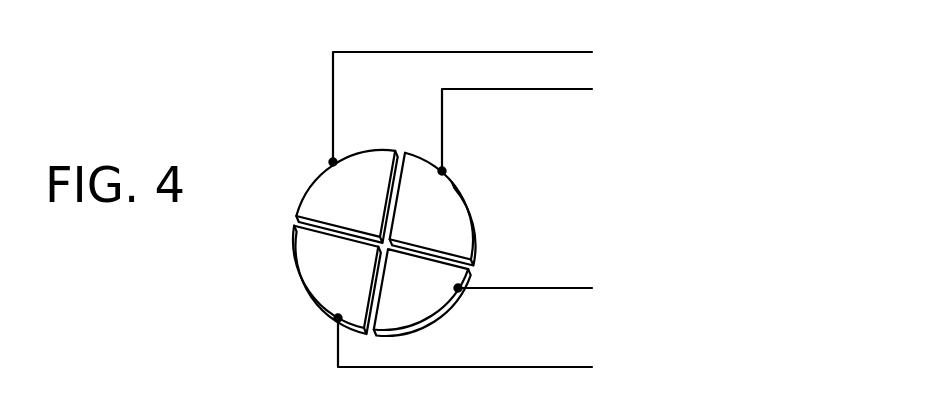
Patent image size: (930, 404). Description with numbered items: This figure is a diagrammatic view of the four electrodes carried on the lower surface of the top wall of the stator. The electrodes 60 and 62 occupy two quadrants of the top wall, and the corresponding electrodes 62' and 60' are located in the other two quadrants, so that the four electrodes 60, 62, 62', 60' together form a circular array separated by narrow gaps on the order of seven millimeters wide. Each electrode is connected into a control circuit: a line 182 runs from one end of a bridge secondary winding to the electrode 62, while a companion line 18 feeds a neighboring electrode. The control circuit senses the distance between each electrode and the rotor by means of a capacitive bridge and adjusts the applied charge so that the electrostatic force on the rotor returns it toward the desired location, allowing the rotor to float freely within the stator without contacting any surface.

The lead line 18 is at (437, 52).
The line 182 is at (537, 89).
The top wall electrode 60 is at (346, 172).
The top wall electrode 62 is at (448, 209).
The top wall electrode 62' is at (315, 280).
The top wall electrode 60' is at (433, 294).